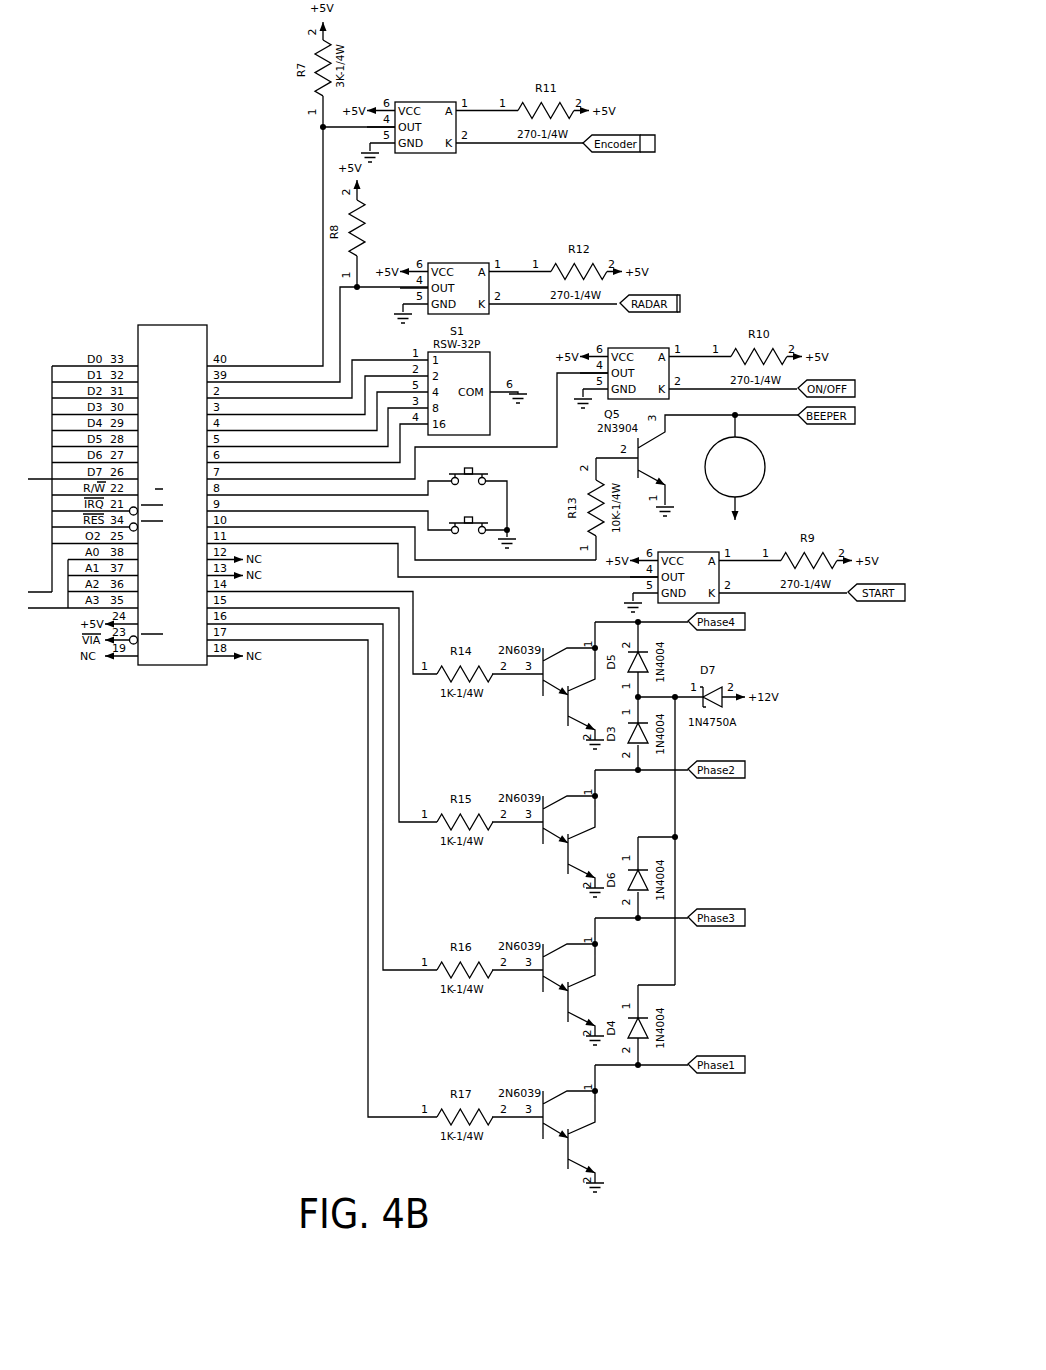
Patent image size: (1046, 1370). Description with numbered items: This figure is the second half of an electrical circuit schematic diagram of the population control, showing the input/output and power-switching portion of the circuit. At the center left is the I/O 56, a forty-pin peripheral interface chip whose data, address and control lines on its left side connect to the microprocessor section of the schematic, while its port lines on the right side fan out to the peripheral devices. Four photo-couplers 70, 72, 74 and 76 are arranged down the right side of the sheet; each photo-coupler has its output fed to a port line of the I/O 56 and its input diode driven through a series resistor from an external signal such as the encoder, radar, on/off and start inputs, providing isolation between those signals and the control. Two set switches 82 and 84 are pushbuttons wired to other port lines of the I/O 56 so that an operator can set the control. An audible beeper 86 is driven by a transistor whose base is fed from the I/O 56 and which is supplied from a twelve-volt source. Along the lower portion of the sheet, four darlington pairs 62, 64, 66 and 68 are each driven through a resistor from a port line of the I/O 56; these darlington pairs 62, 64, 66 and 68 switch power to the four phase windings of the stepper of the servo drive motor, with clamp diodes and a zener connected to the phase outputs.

The I/O 56 is at (186, 325).
The photo-coupler 70 is at (450, 102).
The photo-coupler 72 is at (483, 262).
The photo-coupler 74 is at (665, 348).
The photo-coupler 76 is at (719, 597).
The set switch 82 is at (478, 470).
The set switch 84 is at (480, 518).
The audible beeper 86 is at (763, 478).
The darlington pair 62 is at (530, 700).
The darlington pair 64 is at (532, 840).
The darlington pair 66 is at (534, 1001).
The darlington pair 68 is at (538, 1147).